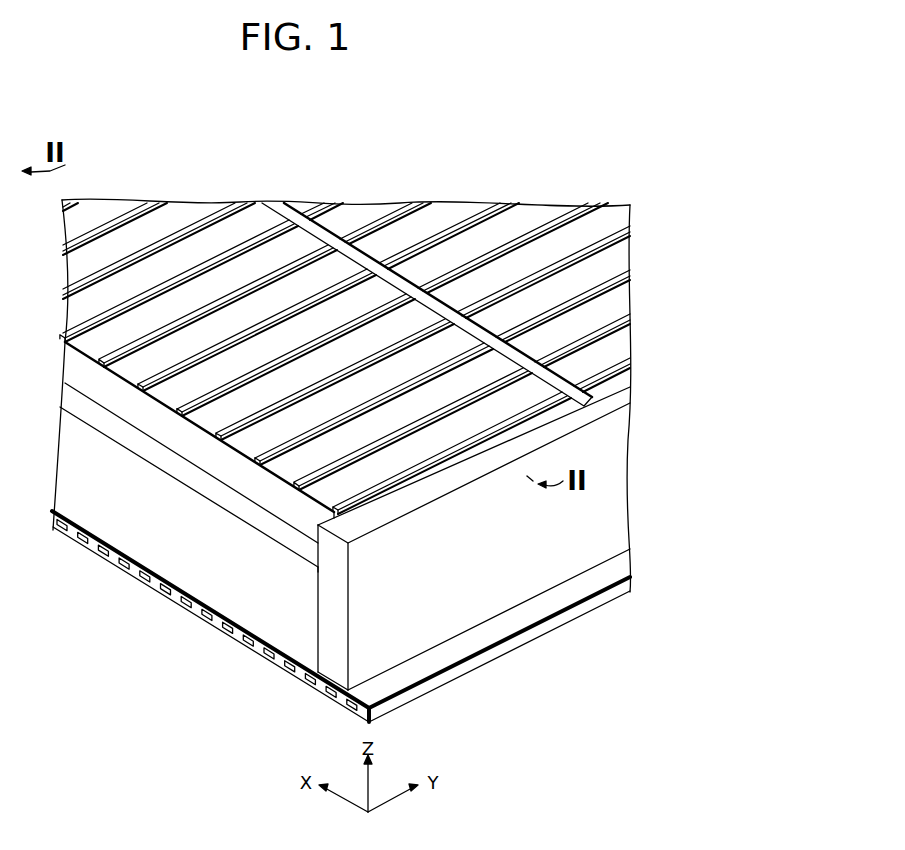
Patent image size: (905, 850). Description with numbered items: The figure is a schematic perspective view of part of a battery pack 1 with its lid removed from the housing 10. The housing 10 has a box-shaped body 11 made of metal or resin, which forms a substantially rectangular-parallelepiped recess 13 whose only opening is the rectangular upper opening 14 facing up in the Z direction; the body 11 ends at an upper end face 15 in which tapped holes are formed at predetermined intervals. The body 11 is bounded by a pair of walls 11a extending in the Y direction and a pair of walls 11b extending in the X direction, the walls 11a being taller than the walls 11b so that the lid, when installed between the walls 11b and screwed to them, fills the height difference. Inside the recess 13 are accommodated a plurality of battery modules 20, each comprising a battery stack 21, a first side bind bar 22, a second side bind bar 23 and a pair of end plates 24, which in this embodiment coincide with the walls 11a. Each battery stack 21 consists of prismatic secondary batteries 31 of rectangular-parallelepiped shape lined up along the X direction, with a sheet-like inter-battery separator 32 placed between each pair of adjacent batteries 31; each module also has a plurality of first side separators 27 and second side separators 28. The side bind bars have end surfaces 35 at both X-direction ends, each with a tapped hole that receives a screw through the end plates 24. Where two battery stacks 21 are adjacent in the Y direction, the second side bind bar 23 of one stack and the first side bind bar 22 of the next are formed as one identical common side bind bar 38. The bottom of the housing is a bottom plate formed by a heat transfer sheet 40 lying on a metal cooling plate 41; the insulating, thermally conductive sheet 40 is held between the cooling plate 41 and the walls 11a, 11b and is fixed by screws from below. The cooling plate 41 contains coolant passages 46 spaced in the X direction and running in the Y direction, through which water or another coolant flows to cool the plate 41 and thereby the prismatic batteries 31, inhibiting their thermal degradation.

The battery pack 1 is at (415, 163).
The housing 10 is at (216, 570).
The body 11 is at (148, 540).
The walls 11a is at (600, 577).
The walls 11b is at (187, 588).
The recess 13 is at (92, 398).
The upper opening 14 is at (122, 432).
The upper end face 15 is at (268, 530).
The battery module 20 is at (323, 242).
The battery stack 21 is at (131, 322).
The first side bind bar 22 is at (98, 553).
The second side bind bar 23 is at (328, 242).
The end plate 24 is at (507, 575).
The first side separator 27 is at (80, 330).
The second side separator 28 is at (272, 292).
The prismatic secondary battery 31 is at (400, 325).
The inter-battery separator 32 is at (180, 270).
The end surface 35 is at (308, 685).
The common side bind bar 38 is at (442, 316).
The heat transfer sheet 40 is at (453, 664).
The cooling plate 41 is at (417, 692).
The coolant passage 46 is at (258, 657).